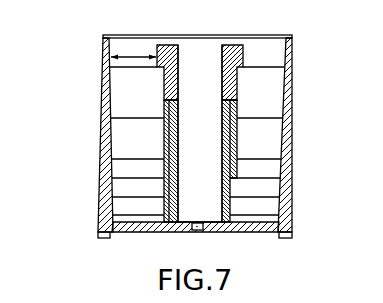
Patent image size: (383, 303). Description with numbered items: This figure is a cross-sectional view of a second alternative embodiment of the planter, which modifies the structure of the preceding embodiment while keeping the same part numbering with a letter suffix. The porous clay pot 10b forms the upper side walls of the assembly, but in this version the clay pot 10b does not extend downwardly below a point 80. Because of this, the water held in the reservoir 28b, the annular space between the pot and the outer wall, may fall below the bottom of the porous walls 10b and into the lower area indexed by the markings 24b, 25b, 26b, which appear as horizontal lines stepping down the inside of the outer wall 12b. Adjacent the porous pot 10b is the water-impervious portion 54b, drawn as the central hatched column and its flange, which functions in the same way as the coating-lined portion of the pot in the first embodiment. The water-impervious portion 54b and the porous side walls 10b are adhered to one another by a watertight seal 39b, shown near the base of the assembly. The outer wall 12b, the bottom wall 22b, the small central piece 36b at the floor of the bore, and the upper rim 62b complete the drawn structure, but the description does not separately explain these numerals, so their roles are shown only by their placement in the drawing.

The clay pot 10b is at (244, 55).
The side wall 12b is at (292, 142).
The bottom wall 22b is at (265, 222).
The marking 24b is at (121, 177).
The marking 25b is at (121, 196).
The marking 26b is at (121, 215).
The reservoir 28b is at (132, 56).
The drain opening 36b is at (197, 233).
The watertight seal 39b is at (132, 232).
The water-impervious portion 54b is at (219, 122).
The upper rim 62b is at (286, 70).
The point 80 is at (164, 137).